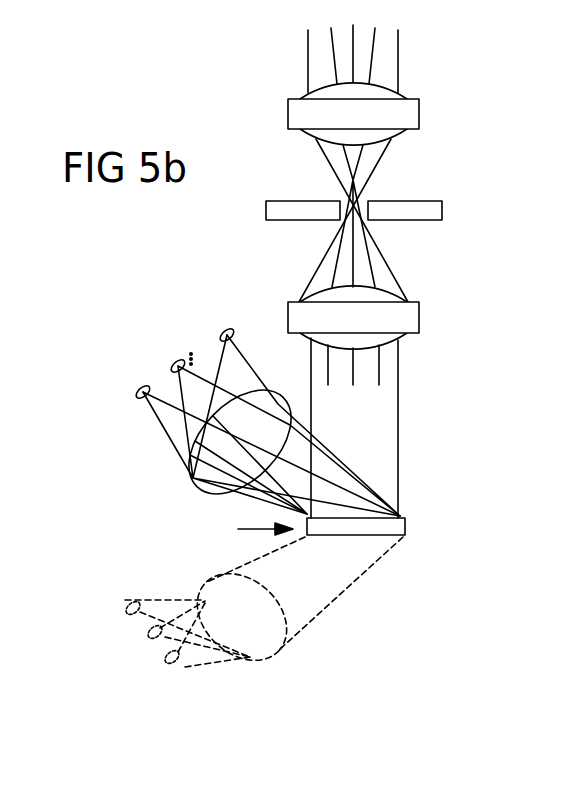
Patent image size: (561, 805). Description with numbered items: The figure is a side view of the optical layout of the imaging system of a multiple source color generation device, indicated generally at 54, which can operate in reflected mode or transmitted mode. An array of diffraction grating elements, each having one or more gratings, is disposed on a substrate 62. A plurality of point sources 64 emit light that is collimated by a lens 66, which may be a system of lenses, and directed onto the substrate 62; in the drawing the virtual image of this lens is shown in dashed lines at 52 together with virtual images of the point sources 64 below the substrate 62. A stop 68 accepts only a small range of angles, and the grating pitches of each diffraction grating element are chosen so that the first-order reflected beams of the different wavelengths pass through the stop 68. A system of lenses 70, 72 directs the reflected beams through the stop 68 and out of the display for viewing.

The virtual image of lens 52 is at (211, 586).
The illumination system 54 is at (105, 244).
The substrate 62 is at (404, 526).
The point sources 64 is at (208, 334).
The lens 66 is at (203, 488).
The stop 68 is at (435, 208).
The lens 70 is at (385, 298).
The lens 72 is at (388, 97).